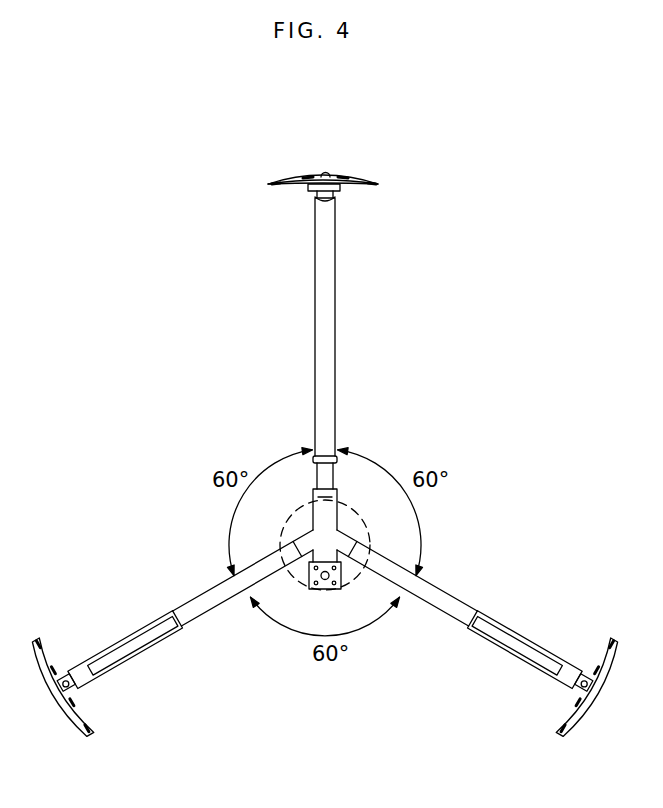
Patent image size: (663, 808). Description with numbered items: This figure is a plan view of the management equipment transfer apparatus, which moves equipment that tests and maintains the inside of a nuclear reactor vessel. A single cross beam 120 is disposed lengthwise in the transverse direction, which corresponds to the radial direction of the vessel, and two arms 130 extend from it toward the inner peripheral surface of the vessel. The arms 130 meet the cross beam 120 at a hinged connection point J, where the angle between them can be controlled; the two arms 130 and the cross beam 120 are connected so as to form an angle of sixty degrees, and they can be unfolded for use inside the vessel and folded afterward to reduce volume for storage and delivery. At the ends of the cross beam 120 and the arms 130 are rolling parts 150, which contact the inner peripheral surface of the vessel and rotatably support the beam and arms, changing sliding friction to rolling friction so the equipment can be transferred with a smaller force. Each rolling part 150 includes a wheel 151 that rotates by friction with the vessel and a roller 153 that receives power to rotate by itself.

The cross beam 120 is at (331, 336).
The arm 130 is at (198, 603).
The rolling part 150 is at (362, 171).
The wheel 151 is at (277, 182).
The roller 153 is at (325, 173).
The connection point J is at (368, 522).